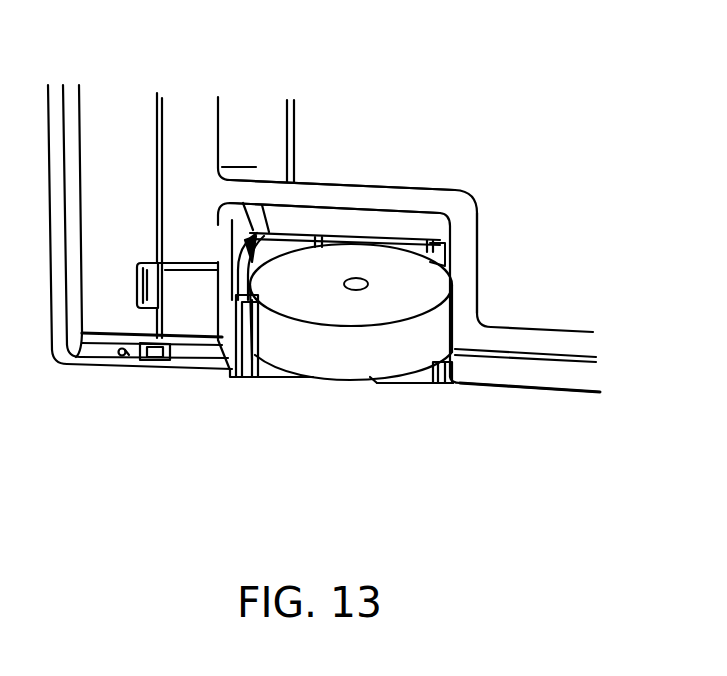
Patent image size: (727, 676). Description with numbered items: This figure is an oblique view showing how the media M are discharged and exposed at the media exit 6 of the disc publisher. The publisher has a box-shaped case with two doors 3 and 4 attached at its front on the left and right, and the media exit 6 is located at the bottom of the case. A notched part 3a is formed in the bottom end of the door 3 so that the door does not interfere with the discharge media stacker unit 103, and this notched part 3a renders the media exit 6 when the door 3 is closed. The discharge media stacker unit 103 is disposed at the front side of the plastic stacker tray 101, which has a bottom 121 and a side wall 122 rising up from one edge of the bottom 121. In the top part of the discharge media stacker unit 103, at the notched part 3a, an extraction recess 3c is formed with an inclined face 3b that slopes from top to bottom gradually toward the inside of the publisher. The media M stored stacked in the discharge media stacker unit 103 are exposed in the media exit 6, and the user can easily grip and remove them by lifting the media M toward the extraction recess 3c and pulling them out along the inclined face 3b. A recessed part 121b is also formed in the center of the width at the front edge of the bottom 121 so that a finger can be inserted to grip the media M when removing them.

The door 4 is at (125, 128).
The door 3 is at (382, 116).
The notched part 3a is at (445, 252).
The inclined face 3b is at (348, 217).
The extraction recess 3c is at (320, 213).
The media exit 6 is at (387, 228).
The media M is at (432, 288).
The side wall 122 is at (237, 242).
The stacker tray 101 is at (225, 376).
The discharge media stacker unit 103 is at (276, 343).
The recessed part 121b is at (379, 384).
The bottom 121 is at (418, 386).